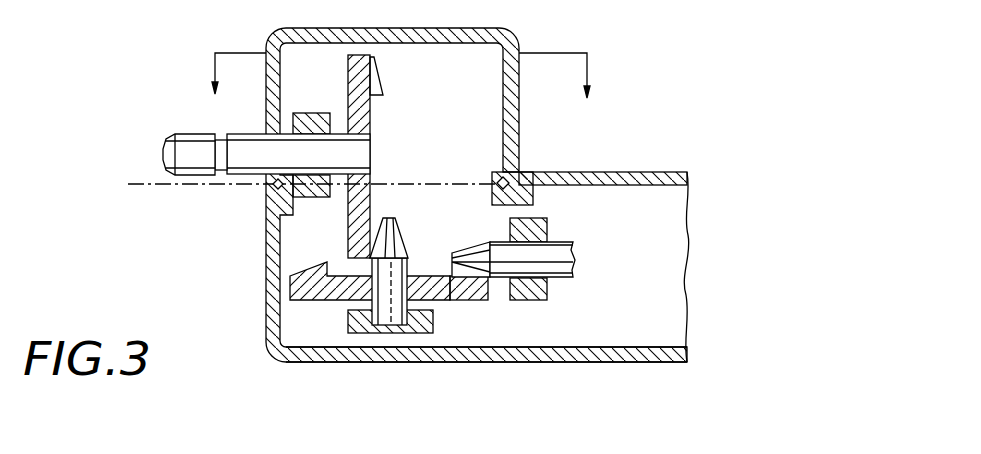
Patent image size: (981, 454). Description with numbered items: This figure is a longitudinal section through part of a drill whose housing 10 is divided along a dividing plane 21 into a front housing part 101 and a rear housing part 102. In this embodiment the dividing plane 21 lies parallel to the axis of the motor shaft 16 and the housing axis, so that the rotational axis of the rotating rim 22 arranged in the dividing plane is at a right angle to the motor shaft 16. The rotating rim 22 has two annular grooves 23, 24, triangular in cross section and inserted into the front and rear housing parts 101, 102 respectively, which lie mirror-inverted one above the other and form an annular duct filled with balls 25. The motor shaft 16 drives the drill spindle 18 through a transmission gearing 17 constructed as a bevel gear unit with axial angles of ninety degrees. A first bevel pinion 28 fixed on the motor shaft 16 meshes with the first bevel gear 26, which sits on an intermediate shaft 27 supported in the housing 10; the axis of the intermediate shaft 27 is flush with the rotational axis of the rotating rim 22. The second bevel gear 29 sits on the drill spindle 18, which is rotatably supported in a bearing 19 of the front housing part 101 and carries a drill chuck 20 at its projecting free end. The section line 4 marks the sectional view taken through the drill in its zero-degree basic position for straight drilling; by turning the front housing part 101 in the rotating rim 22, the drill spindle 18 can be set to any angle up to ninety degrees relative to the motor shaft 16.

The housing 10 is at (677, 158).
The motor shaft 16 is at (560, 260).
The transmission gearing 17 is at (306, 316).
The drill spindle 18 is at (238, 163).
The bearing 19 is at (318, 190).
The drill chuck 20 is at (165, 148).
The dividing plane 21 is at (152, 186).
The rotating rim 22 is at (518, 171).
The annular groove 23 is at (275, 188).
The annular groove 24 is at (301, 181).
The balls 25 is at (272, 176).
The first bevel gear 26 is at (462, 292).
The intermediate shaft 27 is at (385, 320).
The first bevel pinion 28 is at (475, 240).
The second bevel gear 29 is at (372, 121).
The front housing part 101 is at (326, 35).
The rear housing part 102 is at (582, 353).
The section IV-IV 4 is at (396, 76).